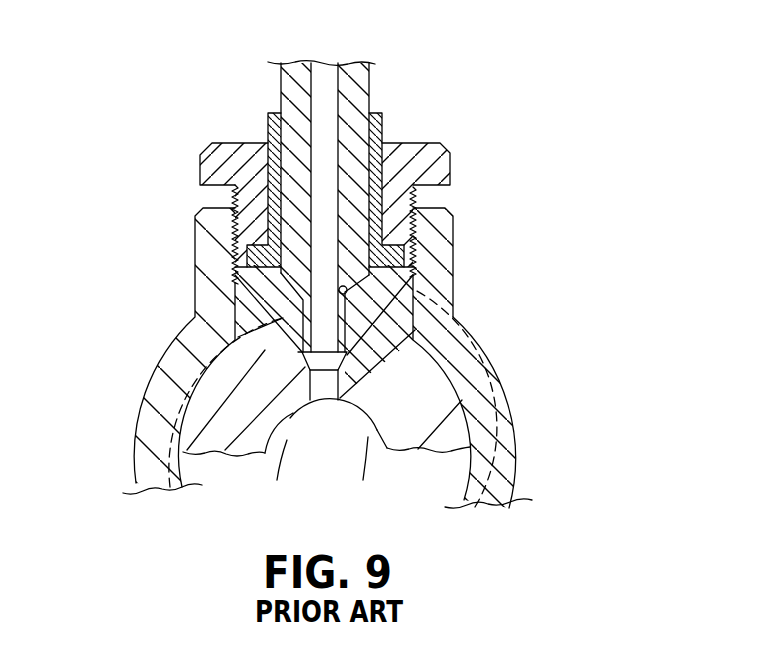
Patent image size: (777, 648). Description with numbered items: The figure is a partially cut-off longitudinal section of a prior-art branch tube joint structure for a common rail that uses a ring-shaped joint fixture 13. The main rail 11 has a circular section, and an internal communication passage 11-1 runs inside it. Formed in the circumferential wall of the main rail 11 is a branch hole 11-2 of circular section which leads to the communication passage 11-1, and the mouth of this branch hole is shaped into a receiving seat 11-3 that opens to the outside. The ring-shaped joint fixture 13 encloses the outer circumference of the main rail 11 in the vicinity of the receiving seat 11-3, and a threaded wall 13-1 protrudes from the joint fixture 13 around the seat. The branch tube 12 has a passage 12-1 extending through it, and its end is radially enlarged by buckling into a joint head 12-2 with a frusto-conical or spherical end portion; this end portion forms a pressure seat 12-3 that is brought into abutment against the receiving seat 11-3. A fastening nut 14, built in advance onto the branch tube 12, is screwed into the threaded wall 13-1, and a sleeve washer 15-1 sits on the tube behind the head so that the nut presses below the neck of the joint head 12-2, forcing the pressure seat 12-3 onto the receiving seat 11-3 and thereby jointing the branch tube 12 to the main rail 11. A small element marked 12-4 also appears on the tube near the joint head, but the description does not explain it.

The main rail 11 is at (446, 414).
The internal communication passage 11-1 is at (365, 470).
The branch hole 11-2 is at (277, 470).
The receiving seat 11-3 is at (360, 368).
The branch tube 12 is at (358, 84).
The passage 12-1 is at (327, 72).
The joint head 12-2 is at (270, 292).
The pressure seat 12-3 is at (237, 340).
The orifice 12-4 is at (348, 292).
The ring-shaped joint fixture 13 is at (505, 463).
The threaded wall 13-1 is at (448, 290).
The fastening nut 14 is at (440, 157).
The sleeve washer 15-1 is at (268, 122).